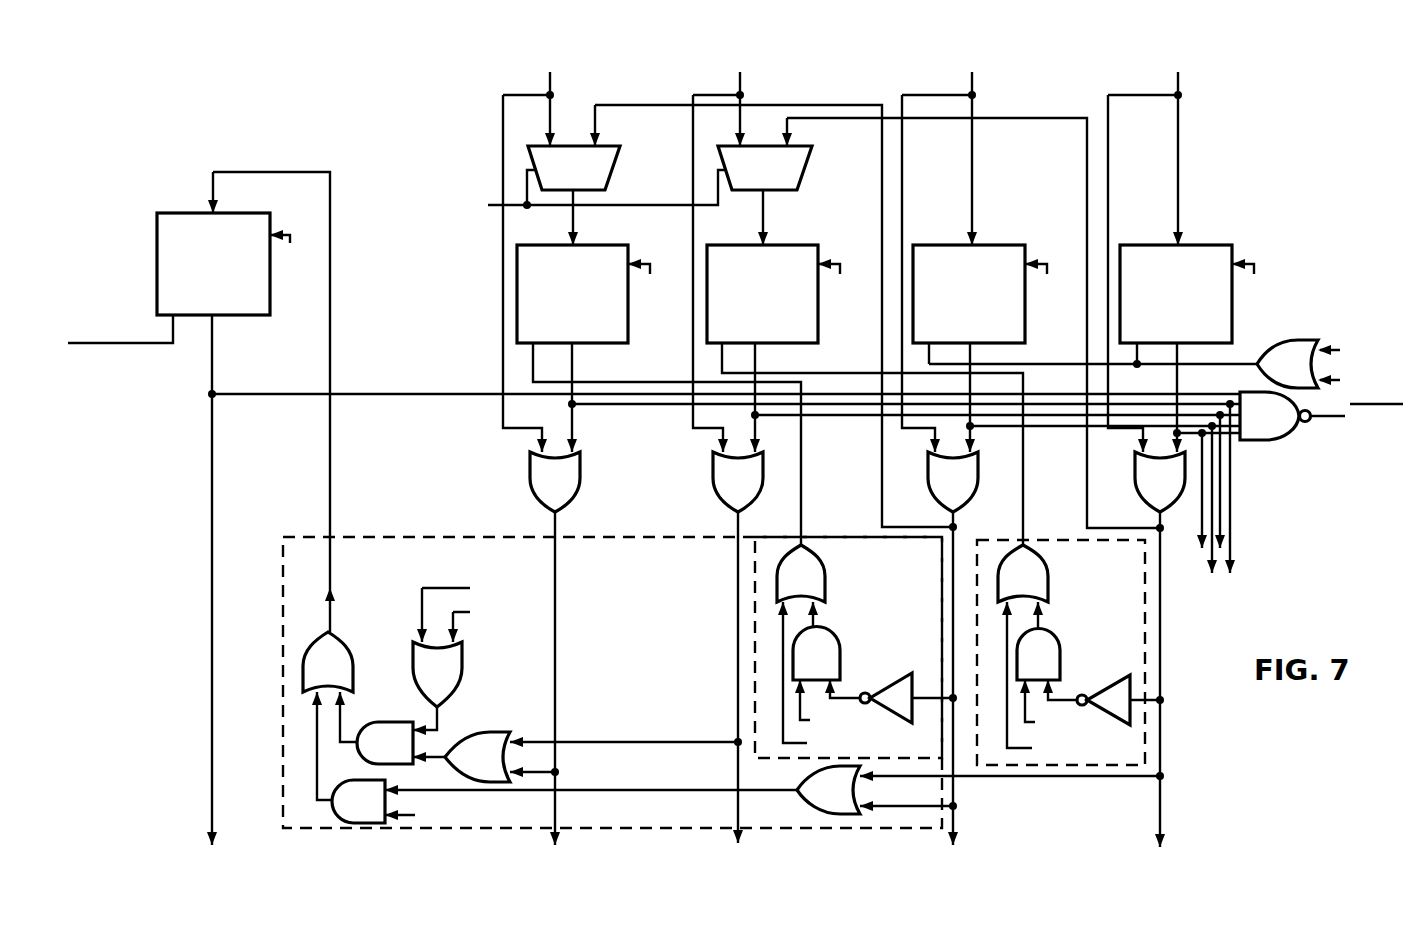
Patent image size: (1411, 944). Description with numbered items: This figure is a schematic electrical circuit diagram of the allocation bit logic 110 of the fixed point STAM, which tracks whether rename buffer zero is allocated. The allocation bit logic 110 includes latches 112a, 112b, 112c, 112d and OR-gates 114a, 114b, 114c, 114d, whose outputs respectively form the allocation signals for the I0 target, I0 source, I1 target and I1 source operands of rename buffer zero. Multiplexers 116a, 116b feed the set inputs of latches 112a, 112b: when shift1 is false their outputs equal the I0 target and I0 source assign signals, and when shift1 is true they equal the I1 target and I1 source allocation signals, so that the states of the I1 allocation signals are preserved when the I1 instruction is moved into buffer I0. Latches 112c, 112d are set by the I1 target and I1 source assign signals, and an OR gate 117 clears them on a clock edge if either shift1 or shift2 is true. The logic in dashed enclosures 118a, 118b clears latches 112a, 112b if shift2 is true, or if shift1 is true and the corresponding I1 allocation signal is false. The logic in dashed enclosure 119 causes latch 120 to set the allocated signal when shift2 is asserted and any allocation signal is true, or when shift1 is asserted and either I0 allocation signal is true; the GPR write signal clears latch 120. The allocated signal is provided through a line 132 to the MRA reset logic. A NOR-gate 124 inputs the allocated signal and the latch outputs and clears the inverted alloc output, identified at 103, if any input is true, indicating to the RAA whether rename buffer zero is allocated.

The allocation bit logic 110 is at (202, 137).
The latch 120 is at (157, 248).
The line 132 is at (211, 590).
The multiplexer 116a is at (594, 182).
The multiplexer 116b is at (786, 182).
The latch 112a is at (591, 245).
The latch 112b is at (780, 245).
The latch 112c is at (993, 245).
The latch 112d is at (1198, 245).
The OR-gate 114a is at (531, 478).
The OR-gate 114b is at (714, 478).
The OR-gate 114c is at (929, 478).
The OR-gate 114d is at (1136, 480).
The OR gate 117 is at (1290, 340).
The NOR-gate 124 is at (1259, 395).
The alloc0 output line 103 is at (1322, 428).
The logic indicated by dashed enclosure 119 is at (662, 578).
The logic 118a is at (905, 578).
The logic 118b is at (1128, 578).